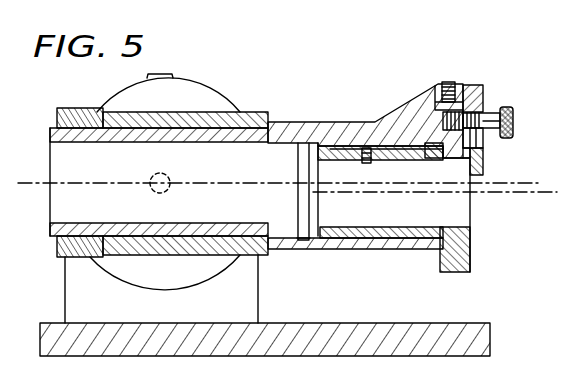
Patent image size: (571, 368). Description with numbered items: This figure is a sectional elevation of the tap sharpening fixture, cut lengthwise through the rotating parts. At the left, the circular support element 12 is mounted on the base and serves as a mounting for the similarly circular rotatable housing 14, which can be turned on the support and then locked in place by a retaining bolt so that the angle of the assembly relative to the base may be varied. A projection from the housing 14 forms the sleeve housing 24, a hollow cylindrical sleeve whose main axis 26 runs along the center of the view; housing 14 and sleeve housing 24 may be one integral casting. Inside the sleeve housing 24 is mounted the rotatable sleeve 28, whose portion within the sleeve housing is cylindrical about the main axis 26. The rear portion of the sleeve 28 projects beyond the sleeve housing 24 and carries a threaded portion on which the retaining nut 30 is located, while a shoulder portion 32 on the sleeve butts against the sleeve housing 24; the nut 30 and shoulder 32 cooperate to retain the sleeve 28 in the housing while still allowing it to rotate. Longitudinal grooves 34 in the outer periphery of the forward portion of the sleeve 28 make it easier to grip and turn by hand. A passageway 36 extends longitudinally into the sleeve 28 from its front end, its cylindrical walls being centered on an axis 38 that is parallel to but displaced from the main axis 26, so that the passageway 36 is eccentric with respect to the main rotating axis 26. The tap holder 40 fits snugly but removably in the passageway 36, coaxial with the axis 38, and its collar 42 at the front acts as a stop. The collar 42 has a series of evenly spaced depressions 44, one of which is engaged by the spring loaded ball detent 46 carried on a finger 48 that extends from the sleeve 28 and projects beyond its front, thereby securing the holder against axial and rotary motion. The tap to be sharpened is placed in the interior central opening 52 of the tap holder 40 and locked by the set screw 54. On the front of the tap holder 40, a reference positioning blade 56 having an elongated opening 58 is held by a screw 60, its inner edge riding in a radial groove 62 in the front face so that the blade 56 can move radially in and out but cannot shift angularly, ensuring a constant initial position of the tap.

The support element 12 is at (243, 295).
The rotatable housing 14 is at (213, 93).
The sleeve housing 24 is at (268, 113).
The main axis 26 is at (77, 183).
The rotatable sleeve 28 is at (283, 122).
The retaining nut 30 is at (84, 97).
The shoulder portion 32 is at (270, 252).
The longitudinal grooves 34 is at (419, 128).
The passageway 36 is at (325, 247).
The axis of passageway 38 is at (420, 172).
The tap holder 40 is at (405, 150).
The collar 42 is at (472, 267).
The depressions 44 is at (443, 270).
The spring loaded ball detent 46 is at (438, 86).
The finger 48 is at (425, 87).
The interior central opening 52 is at (458, 160).
The set screw 54 is at (360, 165).
The reference positioning blade 56 is at (483, 87).
The elongated opening 58 is at (514, 132).
The screw 60 is at (510, 113).
The radial groove 62 is at (485, 150).